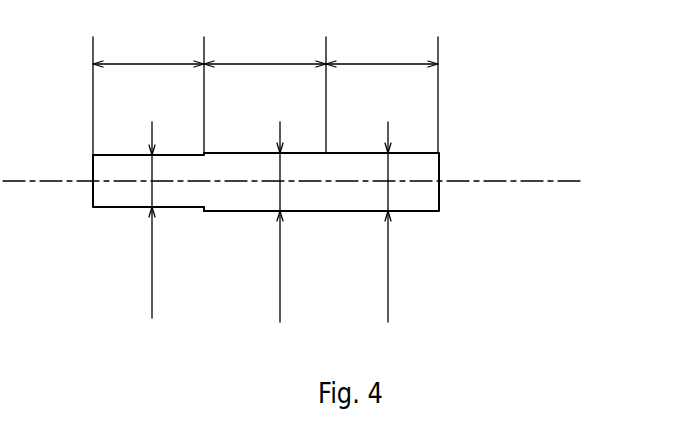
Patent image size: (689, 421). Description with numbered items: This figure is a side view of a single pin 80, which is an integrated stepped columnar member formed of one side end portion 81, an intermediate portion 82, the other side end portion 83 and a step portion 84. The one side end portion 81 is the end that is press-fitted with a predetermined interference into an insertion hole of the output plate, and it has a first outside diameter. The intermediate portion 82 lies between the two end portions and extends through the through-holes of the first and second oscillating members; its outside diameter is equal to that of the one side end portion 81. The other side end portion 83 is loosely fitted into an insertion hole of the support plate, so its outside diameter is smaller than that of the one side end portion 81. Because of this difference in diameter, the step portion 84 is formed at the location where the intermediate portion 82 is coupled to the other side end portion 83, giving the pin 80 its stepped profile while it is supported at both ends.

The pin 80 is at (470, 161).
The one side end portion 81 is at (382, 179).
The intermediate portion 82 is at (265, 179).
The other side end portion 83 is at (148, 177).
The step portion 84 is at (205, 212).